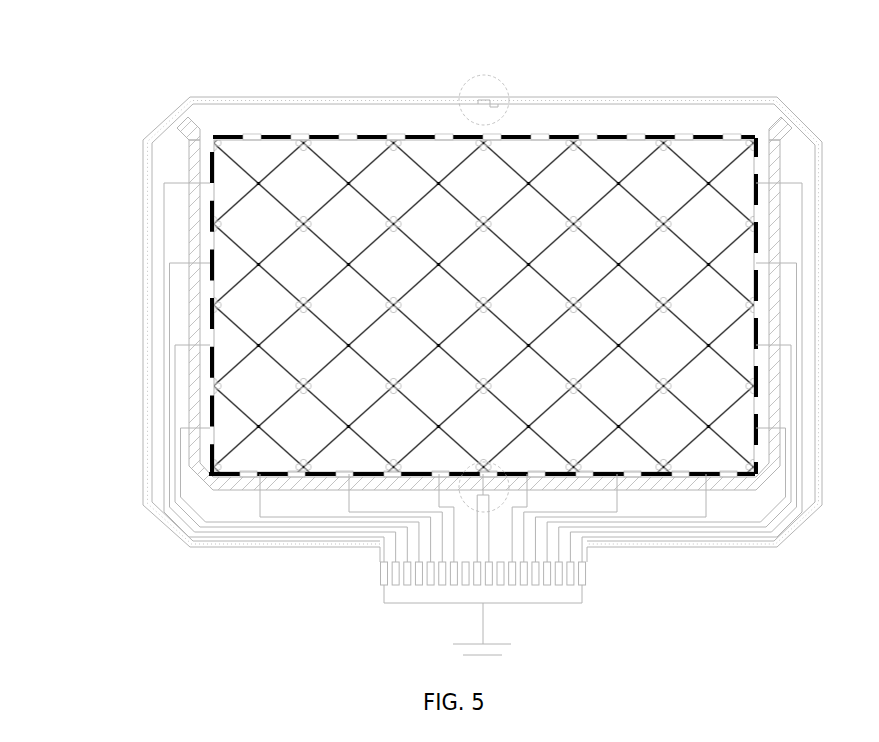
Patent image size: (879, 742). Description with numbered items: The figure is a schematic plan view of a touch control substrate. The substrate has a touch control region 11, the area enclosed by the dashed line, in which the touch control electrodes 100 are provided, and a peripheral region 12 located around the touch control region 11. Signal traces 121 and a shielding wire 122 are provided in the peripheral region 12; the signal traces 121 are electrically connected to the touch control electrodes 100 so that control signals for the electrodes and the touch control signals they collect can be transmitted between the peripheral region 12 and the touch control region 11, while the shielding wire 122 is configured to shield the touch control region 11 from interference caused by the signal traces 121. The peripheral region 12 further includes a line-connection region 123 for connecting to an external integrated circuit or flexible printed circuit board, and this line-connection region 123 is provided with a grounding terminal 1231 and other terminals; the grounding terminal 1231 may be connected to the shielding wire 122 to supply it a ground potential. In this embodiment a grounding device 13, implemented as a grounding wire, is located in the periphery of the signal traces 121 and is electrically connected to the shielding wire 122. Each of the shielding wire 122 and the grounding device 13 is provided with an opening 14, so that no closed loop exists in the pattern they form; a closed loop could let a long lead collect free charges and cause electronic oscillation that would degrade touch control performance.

The touch control electrodes 100 is at (484, 254).
The touch control region 11 is at (482, 254).
The peripheral region 12 is at (483, 284).
The grounding device 13 is at (482, 287).
The opening 14 is at (497, 261).
The signal traces 121 is at (413, 372).
The shielding wire 122 is at (407, 303).
The line-connection region 123 is at (431, 607).
The grounding terminal 1231 is at (636, 572).